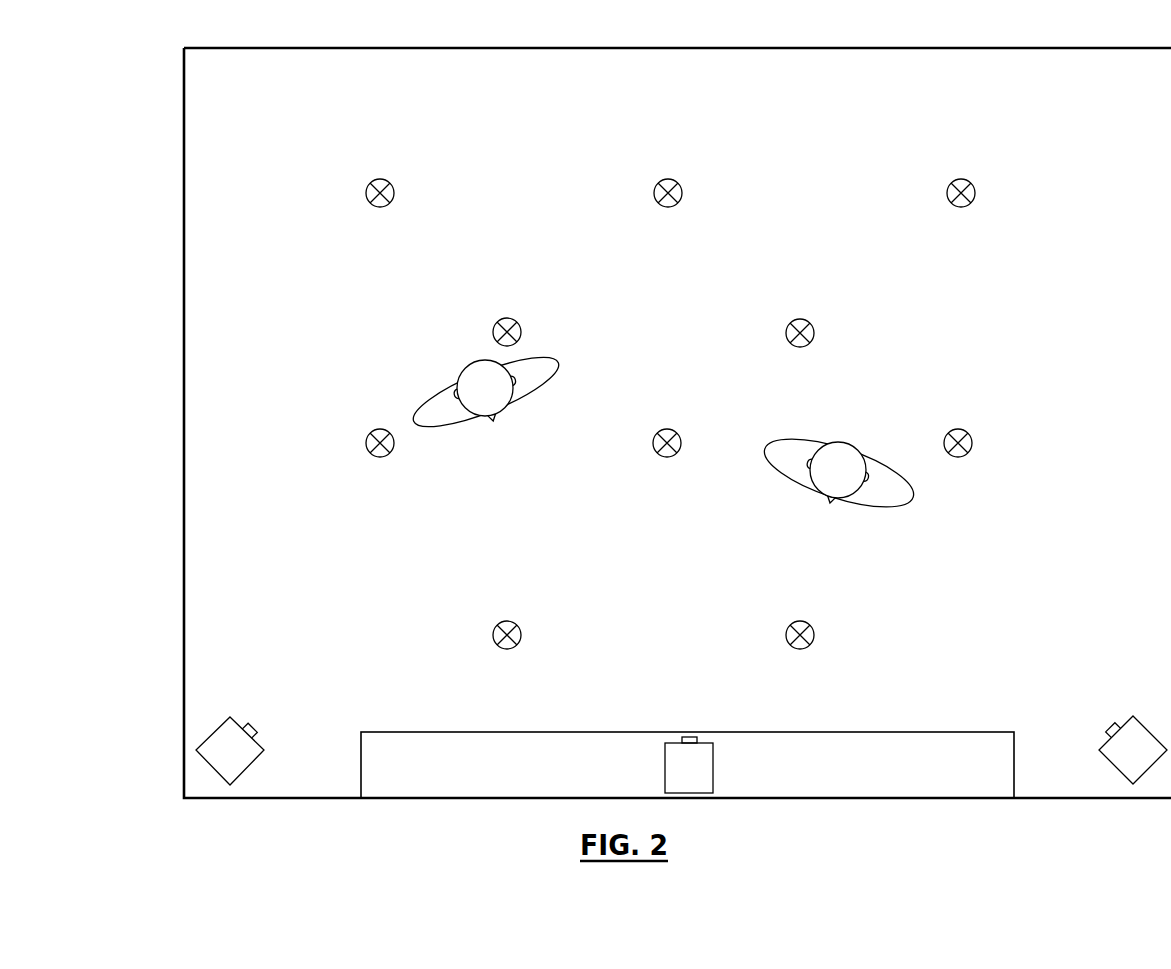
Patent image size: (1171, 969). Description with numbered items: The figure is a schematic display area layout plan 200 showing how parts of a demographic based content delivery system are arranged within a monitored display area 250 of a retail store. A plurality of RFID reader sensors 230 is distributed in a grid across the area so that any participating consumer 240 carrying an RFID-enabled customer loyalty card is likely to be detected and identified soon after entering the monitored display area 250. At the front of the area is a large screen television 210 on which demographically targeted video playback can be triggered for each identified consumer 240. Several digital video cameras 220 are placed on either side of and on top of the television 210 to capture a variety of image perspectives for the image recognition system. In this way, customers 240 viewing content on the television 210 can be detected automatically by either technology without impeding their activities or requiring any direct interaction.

The display area layout plan 200 is at (648, 452).
The television 210 is at (990, 774).
The digital video cameras 220 is at (253, 715).
The RFID reader sensors 230 is at (381, 210).
The participating consumer 240 is at (447, 371).
The monitored display area 250 is at (1164, 92).